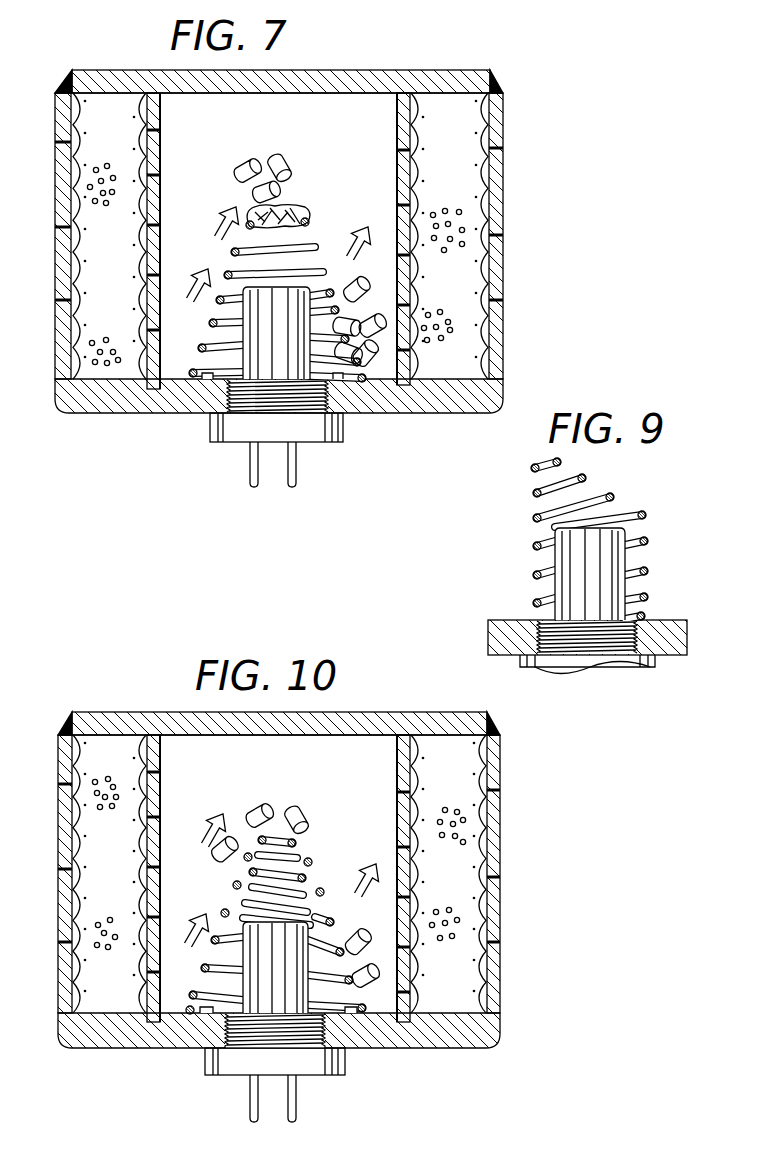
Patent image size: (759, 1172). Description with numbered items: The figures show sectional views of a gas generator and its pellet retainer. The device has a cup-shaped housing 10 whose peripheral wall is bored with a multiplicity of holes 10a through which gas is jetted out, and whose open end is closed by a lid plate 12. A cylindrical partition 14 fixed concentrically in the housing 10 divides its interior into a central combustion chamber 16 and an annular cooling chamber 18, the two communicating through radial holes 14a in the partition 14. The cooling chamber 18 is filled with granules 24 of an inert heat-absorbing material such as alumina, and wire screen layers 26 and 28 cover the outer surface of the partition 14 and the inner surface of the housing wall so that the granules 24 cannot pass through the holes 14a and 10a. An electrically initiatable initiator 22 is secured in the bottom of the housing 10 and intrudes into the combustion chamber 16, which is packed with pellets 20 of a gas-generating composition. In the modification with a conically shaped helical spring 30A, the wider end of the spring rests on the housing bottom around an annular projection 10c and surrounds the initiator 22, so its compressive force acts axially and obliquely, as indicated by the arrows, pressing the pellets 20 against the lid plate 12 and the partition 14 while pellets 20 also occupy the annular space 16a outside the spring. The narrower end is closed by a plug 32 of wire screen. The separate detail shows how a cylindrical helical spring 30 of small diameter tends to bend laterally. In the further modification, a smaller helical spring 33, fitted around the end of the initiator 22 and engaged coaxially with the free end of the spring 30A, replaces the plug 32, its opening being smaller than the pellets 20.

In FIG. 7, the cup-shaped housing 10 is at (486, 398).
In FIG. 9, the cup-shaped housing 10 is at (665, 648).
In FIG. 10, the cup-shaped housing 10 is at (468, 1037).
In FIG. 7, the holes 10a is at (496, 241).
In FIG. 10, the holes 10a is at (496, 872).
In FIG. 7, the annular projection 10c is at (343, 375).
In FIG. 10, the annular projection 10c is at (203, 1014).
In FIG. 7, the lid plate 12 is at (452, 87).
In FIG. 10, the lid plate 12 is at (445, 727).
In FIG. 7, the cylindrical partition 14 is at (158, 104).
In FIG. 10, the cylindrical partition 14 is at (157, 828).
In FIG. 7, the radial holes 14a is at (157, 175).
In FIG. 10, the radial holes 14a is at (157, 808).
In FIG. 7, the combustion chamber 16 is at (338, 140).
In FIG. 10, the combustion chamber 16 is at (221, 778).
In FIG. 7, the annular space 16a is at (203, 328).
In FIG. 9, the annular space 16a is at (518, 590).
In FIG. 10, the annular space 16a is at (201, 967).
In FIG. 7, the annular cooling chamber 18 is at (123, 137).
In FIG. 10, the annular cooling chamber 18 is at (120, 767).
In FIG. 7, the pellets 20 is at (382, 386).
In FIG. 10, the pellets 20 is at (262, 805).
In FIG. 7, the initiator 22 is at (315, 430).
In FIG. 9, the initiator 22 is at (613, 588).
In FIG. 10, the initiator 22 is at (335, 1062).
In FIG. 7, the granules 24 is at (113, 365).
In FIG. 10, the granules 24 is at (102, 962).
In FIG. 7, the wire screen layer 26 is at (133, 345).
In FIG. 10, the wire screen layer 26 is at (140, 872).
In FIG. 7, the wire screen layer 28 is at (72, 228).
In FIG. 10, the wire screen layer 28 is at (77, 812).
In FIG. 9, the helical spring 30 is at (643, 516).
In FIG. 7, the conical helical spring 30A is at (228, 273).
In FIG. 10, the conical helical spring 30A is at (312, 863).
In FIG. 7, the plug 32 is at (293, 210).
In FIG. 10, the smaller helical spring 33 is at (297, 843).